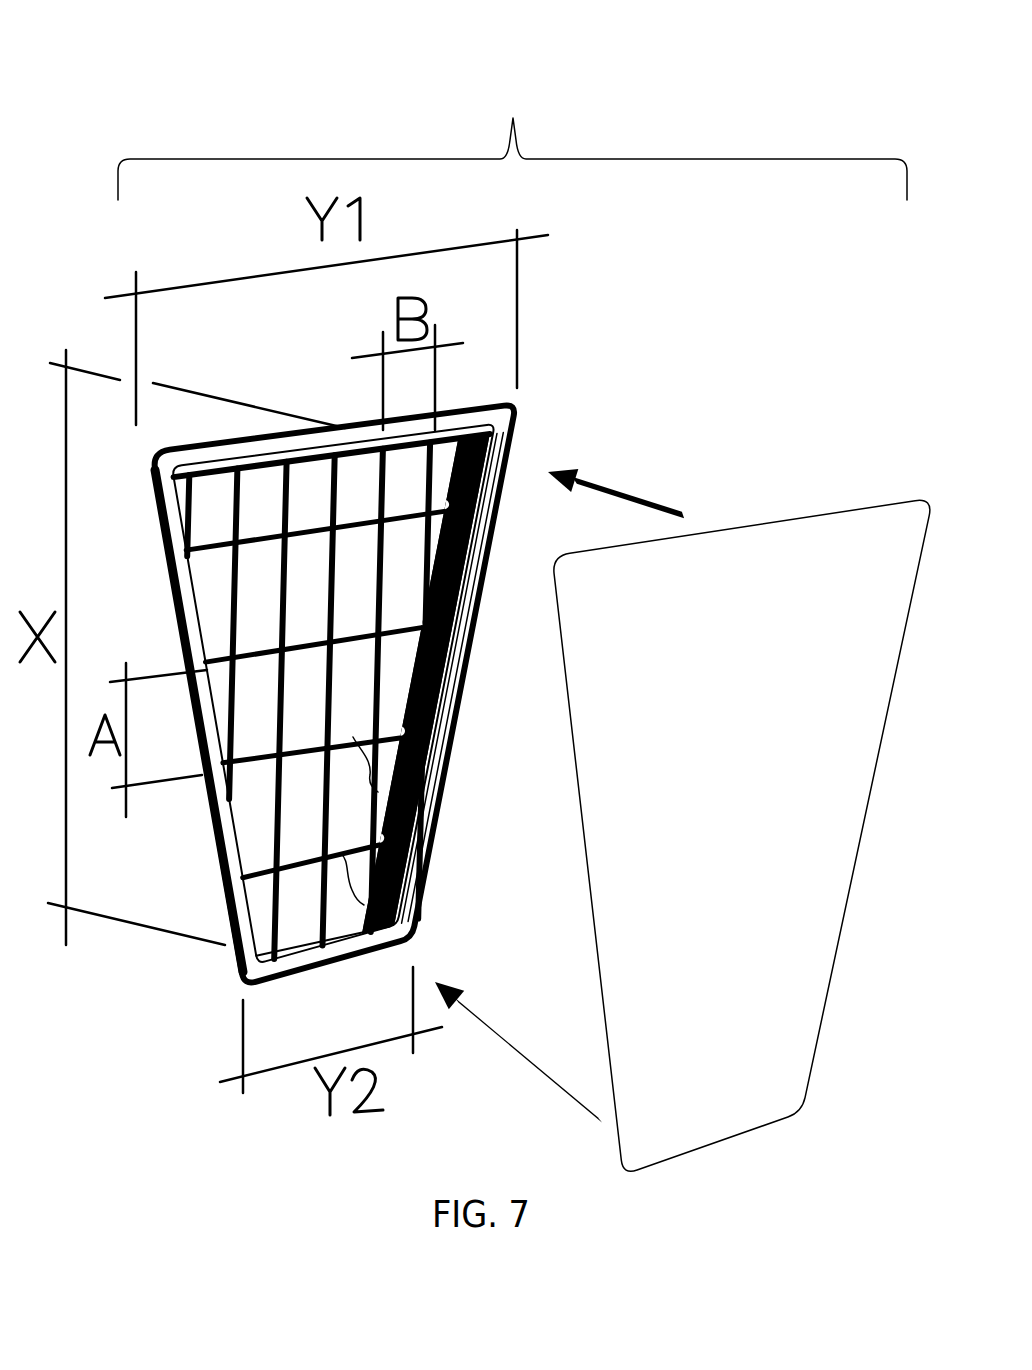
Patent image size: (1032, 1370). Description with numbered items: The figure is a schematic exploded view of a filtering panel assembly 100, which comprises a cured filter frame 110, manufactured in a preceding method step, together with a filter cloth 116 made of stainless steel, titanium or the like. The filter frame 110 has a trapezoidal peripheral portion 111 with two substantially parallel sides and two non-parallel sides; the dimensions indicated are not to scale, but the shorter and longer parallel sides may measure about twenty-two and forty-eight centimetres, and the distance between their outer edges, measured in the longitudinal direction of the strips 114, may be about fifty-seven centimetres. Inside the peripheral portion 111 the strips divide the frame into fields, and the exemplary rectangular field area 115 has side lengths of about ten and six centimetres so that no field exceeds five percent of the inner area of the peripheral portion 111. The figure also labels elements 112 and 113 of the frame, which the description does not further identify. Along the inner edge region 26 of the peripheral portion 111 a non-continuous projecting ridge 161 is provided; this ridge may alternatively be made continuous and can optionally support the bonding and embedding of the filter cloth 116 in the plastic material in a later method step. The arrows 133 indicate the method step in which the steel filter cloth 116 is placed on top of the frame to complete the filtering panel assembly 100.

The filtering panel assembly 100 is at (512, 137).
The filter frame 110 is at (514, 409).
The peripheral portion 111 is at (505, 428).
The vertical bars 112 is at (237, 500).
The horizontal bars 113 is at (395, 912).
The strips 114 is at (280, 452).
The rectangular field area 115 is at (503, 892).
The filter cloth 116 is at (737, 983).
The arrows 133 is at (683, 513).
The projecting ridge 161 is at (378, 724).
The inner edge region 26 is at (407, 938).